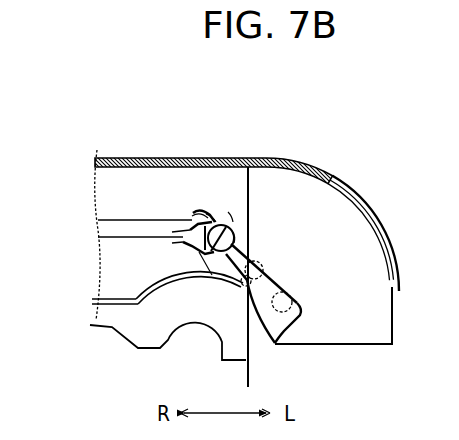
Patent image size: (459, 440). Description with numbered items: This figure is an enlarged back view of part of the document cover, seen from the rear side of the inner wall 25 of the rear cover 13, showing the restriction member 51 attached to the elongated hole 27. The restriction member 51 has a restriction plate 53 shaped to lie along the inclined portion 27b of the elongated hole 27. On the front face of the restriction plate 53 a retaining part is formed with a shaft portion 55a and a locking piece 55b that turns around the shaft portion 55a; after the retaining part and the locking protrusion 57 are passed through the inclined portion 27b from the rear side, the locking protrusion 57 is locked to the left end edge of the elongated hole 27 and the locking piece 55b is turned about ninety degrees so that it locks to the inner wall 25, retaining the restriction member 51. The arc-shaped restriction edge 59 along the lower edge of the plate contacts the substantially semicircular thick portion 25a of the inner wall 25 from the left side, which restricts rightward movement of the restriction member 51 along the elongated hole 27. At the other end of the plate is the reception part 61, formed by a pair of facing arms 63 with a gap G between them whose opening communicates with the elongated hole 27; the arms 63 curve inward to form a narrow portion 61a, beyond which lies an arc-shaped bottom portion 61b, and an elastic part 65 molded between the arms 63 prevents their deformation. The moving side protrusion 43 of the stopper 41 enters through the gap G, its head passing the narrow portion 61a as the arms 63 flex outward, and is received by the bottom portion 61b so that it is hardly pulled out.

The rear cover 13 is at (153, 156).
The inner wall 25 is at (115, 283).
The thick portion 25a is at (258, 325).
The elongated hole 27 is at (128, 226).
The inclined portion 27b is at (292, 286).
The stopper 41 is at (192, 224).
The moving side protrusion 43 is at (231, 212).
The restriction member 51 is at (250, 241).
The restriction plate 53 is at (283, 272).
The shaft portion 55a is at (262, 266).
The locking piece 55b is at (243, 286).
The locking protrusion 57 is at (296, 306).
The restriction edge 59 is at (285, 320).
The reception part 61 is at (209, 212).
The narrow portion 61a is at (206, 214).
The bottom portion 61b is at (229, 224).
The arms 63 is at (199, 212).
The elastic part 65 is at (196, 279).
The gap G is at (128, 236).